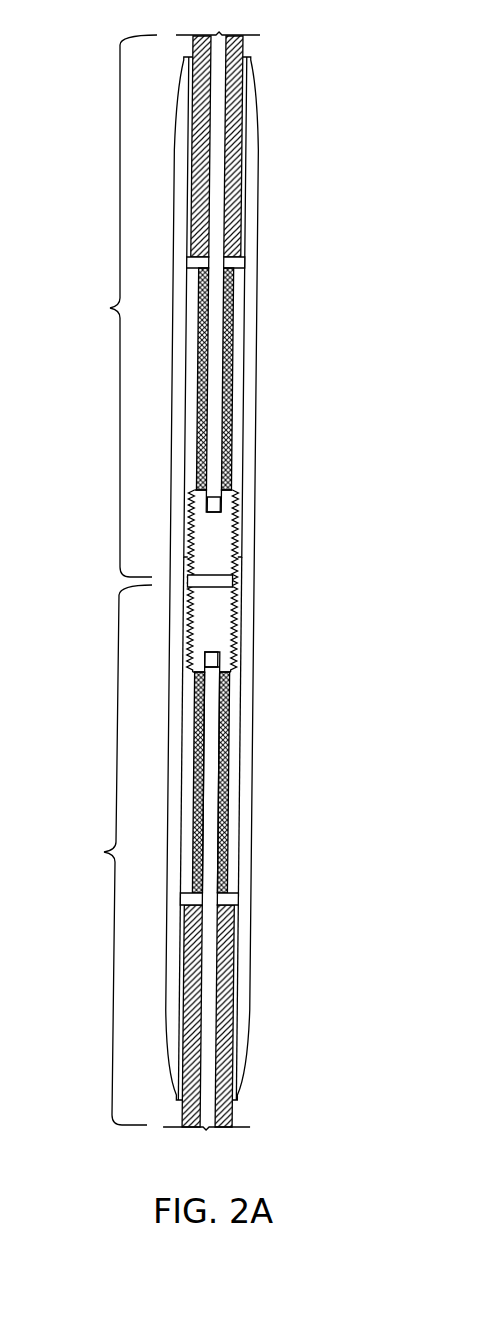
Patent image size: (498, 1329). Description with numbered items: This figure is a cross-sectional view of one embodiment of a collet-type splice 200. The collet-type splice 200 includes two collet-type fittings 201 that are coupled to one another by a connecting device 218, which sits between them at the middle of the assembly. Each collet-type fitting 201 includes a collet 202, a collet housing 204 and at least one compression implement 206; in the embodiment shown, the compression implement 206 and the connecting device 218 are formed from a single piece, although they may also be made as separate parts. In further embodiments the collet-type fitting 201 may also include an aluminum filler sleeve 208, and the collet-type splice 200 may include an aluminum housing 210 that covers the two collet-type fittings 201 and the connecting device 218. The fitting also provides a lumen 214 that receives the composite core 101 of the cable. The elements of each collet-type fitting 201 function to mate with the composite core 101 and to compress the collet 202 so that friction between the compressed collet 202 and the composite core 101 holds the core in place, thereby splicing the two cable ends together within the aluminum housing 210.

The collet-type splice 200 is at (298, 107).
The collet-type fitting 201 is at (103, 580).
The collet 202 is at (230, 782).
The collet housing 204 is at (238, 888).
The compression implement 206 is at (237, 628).
The aluminum filler sleeve 208 is at (243, 202).
The aluminum housing 210 is at (253, 842).
The lumen 214 is at (216, 661).
The connecting device 218 is at (180, 577).
The composite core 101 is at (212, 723).